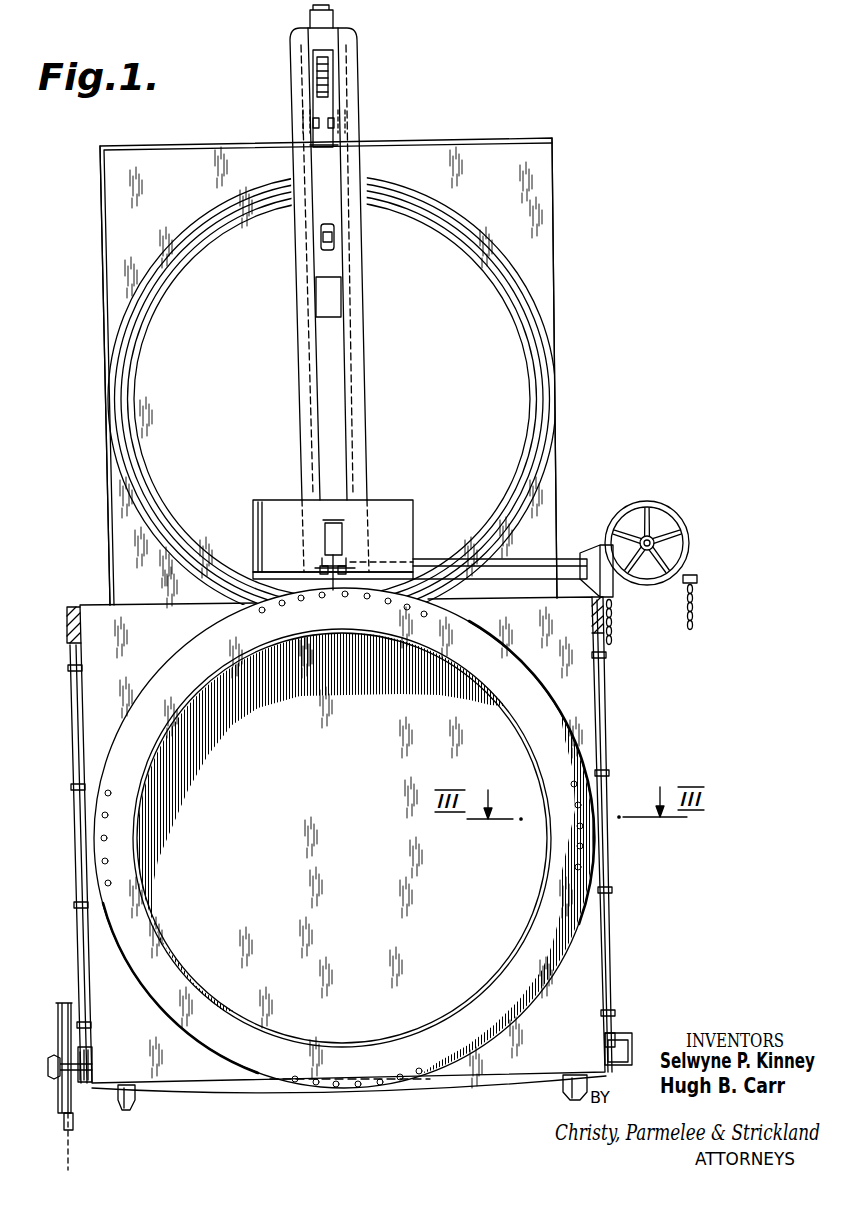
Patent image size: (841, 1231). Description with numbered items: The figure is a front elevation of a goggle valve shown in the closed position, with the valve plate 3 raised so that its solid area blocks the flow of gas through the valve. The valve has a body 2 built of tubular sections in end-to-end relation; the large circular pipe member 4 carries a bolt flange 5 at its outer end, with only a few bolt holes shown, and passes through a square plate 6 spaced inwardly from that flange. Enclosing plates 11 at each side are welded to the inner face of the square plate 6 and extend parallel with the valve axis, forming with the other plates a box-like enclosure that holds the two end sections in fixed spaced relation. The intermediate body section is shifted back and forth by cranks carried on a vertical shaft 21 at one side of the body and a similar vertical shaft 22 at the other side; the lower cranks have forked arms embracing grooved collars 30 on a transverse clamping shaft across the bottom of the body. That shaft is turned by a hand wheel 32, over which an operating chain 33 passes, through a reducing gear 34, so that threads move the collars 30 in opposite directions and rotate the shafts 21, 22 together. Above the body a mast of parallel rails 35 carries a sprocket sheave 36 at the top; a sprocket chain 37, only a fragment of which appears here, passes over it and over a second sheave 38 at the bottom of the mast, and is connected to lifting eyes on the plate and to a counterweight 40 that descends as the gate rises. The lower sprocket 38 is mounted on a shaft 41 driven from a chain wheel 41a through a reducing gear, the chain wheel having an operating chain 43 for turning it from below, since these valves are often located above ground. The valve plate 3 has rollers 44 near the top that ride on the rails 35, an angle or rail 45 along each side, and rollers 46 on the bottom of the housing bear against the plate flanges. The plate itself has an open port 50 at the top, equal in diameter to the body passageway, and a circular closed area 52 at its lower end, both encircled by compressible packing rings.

The body 2 is at (600, 690).
The valve plate 3 is at (537, 268).
The large circular pipe member 4 is at (513, 936).
The flange 5 is at (513, 936).
The square plate 6 is at (598, 983).
The enclosing plates 11 is at (70, 668).
The vertical shaft 21 is at (604, 722).
The vertical shaft 22 is at (72, 727).
The collar 30 is at (620, 1050).
The hand wheel 32 is at (60, 1030).
The operating chain 33 is at (74, 1148).
The reducing gear 34 is at (90, 1088).
The parallel rails 35 is at (302, 378).
The sprocket sheave 36 is at (333, 78).
The sprocket chain 37 is at (336, 240).
The second sheave 38 is at (348, 565).
The counterweight 40 is at (278, 505).
The shaft 41 is at (543, 558).
The chain wheel 41a is at (683, 526).
The operating chain 43 is at (690, 610).
The rollers 44 is at (298, 125).
The angle or rail 45 is at (105, 462).
The rollers 46 is at (135, 1098).
The open port 50 is at (135, 397).
The circular closed area 52 is at (368, 776).